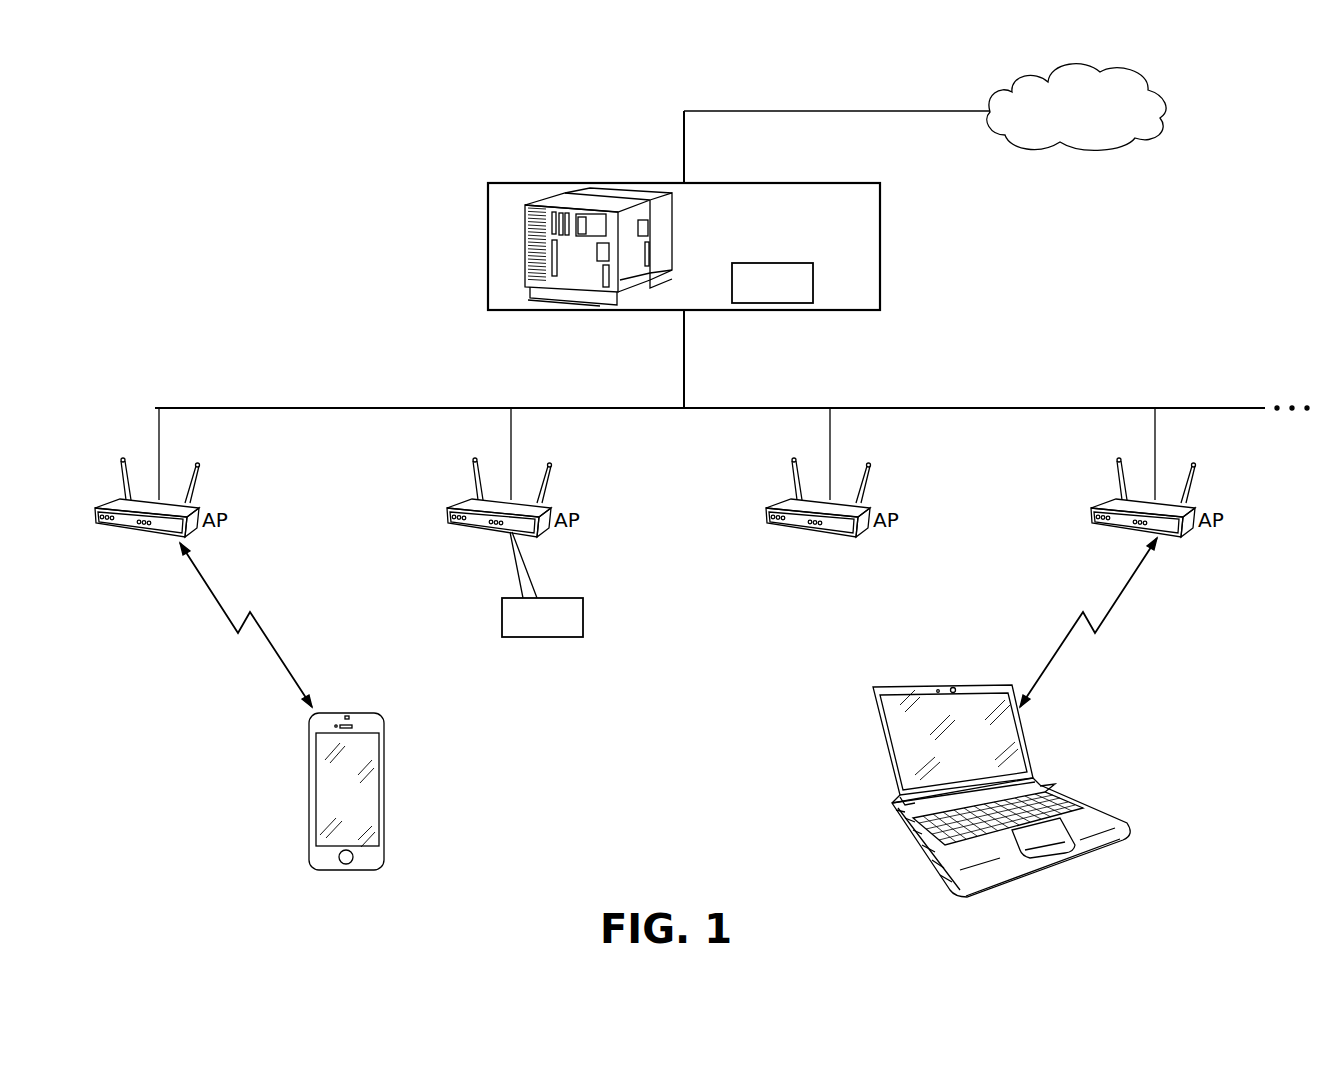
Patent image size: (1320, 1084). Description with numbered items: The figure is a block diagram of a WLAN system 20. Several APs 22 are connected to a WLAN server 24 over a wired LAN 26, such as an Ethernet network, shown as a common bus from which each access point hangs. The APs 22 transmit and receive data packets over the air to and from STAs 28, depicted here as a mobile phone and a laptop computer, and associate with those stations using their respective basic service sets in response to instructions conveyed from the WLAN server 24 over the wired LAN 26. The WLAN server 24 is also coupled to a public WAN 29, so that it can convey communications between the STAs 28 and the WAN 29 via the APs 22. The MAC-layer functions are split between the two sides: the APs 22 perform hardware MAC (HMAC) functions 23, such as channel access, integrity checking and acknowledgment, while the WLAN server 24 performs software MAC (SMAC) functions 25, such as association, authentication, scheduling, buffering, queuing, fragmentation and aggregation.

The WLAN system 20 is at (253, 137).
The access point 22 is at (658, 485).
The hardware MAC (HMAC) functions 23 is at (583, 613).
The WLAN server 24 is at (880, 220).
The software MAC (SMAC) functions 25 is at (813, 277).
The wired LAN 26 is at (1005, 408).
The station (STA) 28 is at (384, 770).
The public WAN 29 is at (1143, 80).